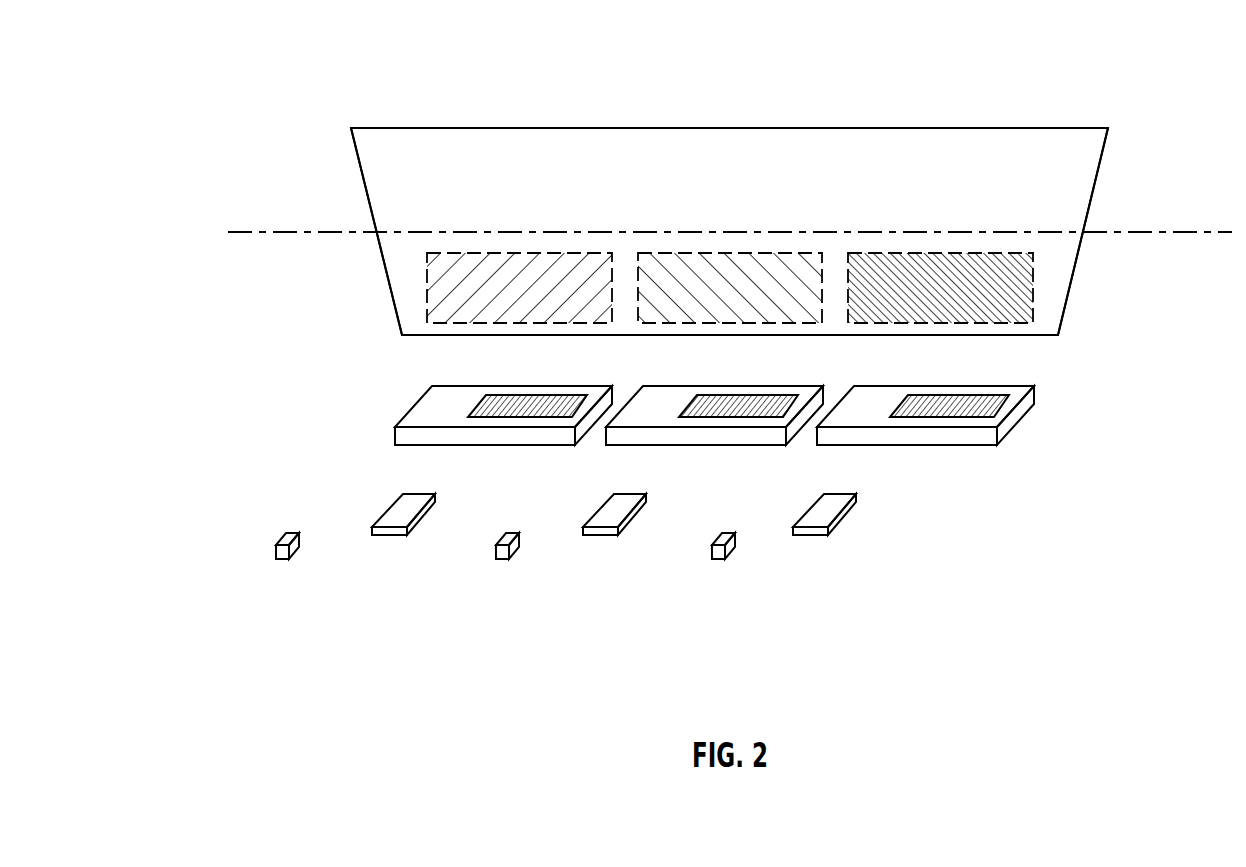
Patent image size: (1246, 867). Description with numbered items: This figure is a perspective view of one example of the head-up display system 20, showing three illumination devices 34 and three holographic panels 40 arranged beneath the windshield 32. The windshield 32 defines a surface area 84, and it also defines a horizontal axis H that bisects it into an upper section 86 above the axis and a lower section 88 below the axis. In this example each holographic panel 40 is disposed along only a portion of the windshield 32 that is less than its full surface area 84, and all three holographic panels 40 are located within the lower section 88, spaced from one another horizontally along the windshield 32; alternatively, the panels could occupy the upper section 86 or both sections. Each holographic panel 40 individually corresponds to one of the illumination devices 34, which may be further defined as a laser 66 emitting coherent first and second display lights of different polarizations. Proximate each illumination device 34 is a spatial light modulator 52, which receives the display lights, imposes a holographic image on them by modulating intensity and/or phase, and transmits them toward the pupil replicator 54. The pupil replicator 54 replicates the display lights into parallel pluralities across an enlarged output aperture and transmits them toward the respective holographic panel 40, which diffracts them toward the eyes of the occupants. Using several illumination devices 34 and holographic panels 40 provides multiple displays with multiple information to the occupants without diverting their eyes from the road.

The head-up display system 20 is at (685, 90).
The windshield 32 is at (947, 142).
The upper section 86 is at (512, 127).
The surface area 84 is at (1107, 143).
The lower section 88 is at (397, 270).
The horizontal axis H is at (1181, 232).
The holographic panel 40 is at (882, 262).
The pupil replicator 54 is at (408, 445).
The spatial light modulator 52 is at (372, 530).
The laser 66 is at (276, 552).
The illumination device 34 is at (282, 560).